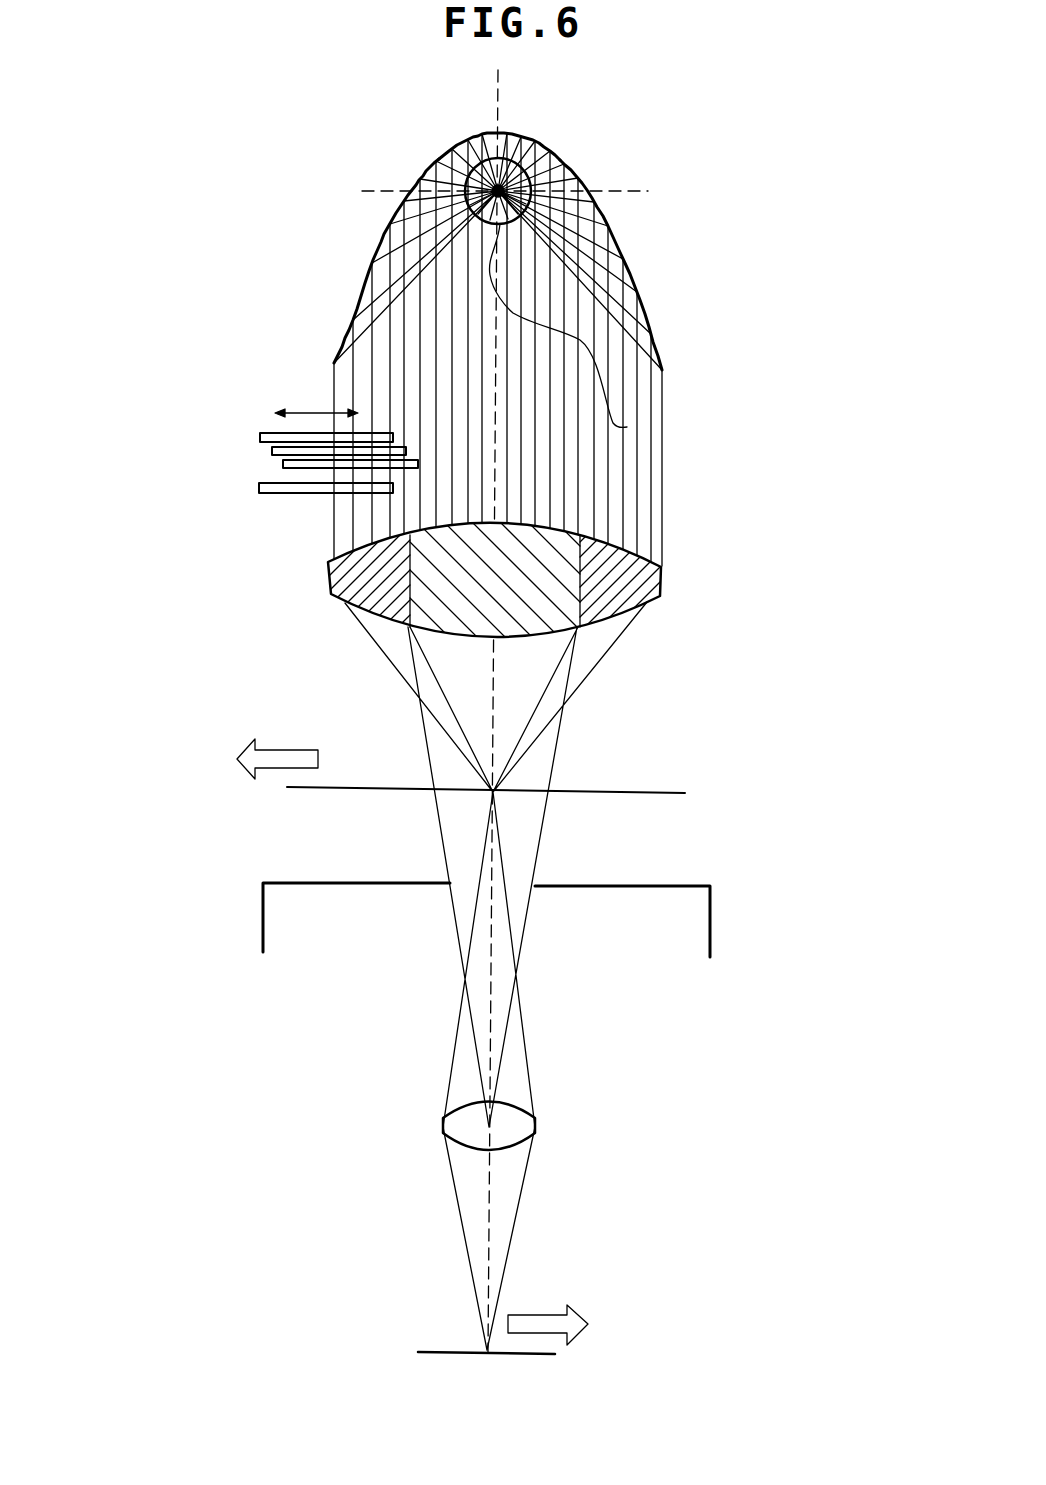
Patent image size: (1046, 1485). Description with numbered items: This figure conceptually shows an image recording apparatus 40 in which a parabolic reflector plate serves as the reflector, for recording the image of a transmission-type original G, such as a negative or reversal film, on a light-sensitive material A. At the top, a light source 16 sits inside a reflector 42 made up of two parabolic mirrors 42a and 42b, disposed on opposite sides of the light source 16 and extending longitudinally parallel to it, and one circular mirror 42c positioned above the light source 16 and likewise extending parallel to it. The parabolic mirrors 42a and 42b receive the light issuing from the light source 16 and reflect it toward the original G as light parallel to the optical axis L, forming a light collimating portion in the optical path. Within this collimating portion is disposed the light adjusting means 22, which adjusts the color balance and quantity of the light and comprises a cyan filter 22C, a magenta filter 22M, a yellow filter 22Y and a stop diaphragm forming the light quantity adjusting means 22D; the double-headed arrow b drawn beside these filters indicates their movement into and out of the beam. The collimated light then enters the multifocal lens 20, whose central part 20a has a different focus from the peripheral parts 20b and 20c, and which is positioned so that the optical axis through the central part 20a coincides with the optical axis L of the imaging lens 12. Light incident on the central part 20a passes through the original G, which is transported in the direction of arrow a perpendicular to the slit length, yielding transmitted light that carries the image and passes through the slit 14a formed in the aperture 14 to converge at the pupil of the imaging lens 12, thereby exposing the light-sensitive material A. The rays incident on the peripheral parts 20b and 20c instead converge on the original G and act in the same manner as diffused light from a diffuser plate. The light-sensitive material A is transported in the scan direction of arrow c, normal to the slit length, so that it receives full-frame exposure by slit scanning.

The imaging lens 12 is at (533, 1123).
The aperture 14 is at (486, 952).
The slit 14a is at (444, 903).
The light source 16 is at (627, 427).
The multifocal lens 20 is at (507, 586).
The central part 20a is at (563, 660).
The peripheral part 20b is at (662, 590).
The peripheral part 20c is at (343, 603).
The light adjusting means 22 is at (257, 432).
The cyan filter 22C is at (260, 437).
The magenta filter 22M is at (272, 451).
The yellow filter 22Y is at (283, 465).
The light quantity adjusting means 22D is at (259, 492).
The image recording apparatus 40 is at (558, 329).
The reflector 42 is at (543, 329).
The parabolic mirror 42a is at (653, 348).
The parabolic mirror 42b is at (383, 243).
The circular mirror 42c is at (522, 134).
The original G is at (617, 795).
The optical axis L is at (490, 1177).
The light-sensitive material A is at (445, 1352).
The direction of transport of the original a is at (320, 756).
The filter moving direction b is at (307, 412).
The scan direction c is at (543, 1313).